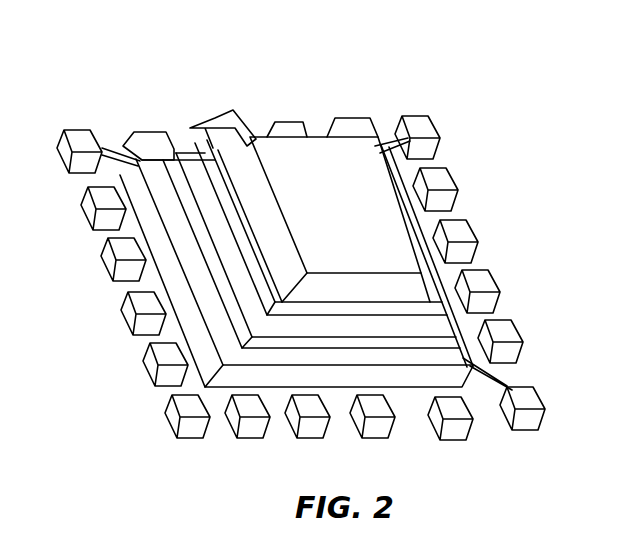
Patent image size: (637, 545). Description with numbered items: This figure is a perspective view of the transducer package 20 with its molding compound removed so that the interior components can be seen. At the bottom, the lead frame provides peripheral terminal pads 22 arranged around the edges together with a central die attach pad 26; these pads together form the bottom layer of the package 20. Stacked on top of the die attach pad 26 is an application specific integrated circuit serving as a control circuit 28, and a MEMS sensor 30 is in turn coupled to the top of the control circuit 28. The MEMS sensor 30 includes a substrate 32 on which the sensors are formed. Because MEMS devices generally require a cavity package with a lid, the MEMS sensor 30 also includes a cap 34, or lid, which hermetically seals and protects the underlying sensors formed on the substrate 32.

The transducer package 20 is at (120, 451).
The peripheral terminal pads 22 is at (82, 212).
The die attach pad 26 is at (173, 285).
The control circuit 28 is at (187, 159).
The MEMS sensor 30 is at (212, 118).
The substrate 32 is at (390, 187).
The cap 34 is at (356, 233).